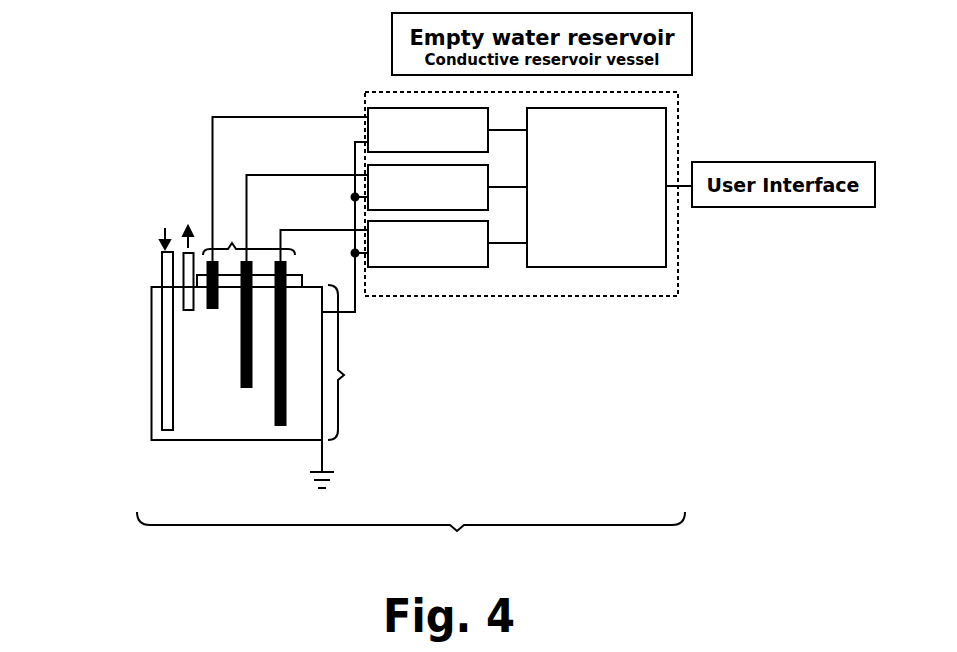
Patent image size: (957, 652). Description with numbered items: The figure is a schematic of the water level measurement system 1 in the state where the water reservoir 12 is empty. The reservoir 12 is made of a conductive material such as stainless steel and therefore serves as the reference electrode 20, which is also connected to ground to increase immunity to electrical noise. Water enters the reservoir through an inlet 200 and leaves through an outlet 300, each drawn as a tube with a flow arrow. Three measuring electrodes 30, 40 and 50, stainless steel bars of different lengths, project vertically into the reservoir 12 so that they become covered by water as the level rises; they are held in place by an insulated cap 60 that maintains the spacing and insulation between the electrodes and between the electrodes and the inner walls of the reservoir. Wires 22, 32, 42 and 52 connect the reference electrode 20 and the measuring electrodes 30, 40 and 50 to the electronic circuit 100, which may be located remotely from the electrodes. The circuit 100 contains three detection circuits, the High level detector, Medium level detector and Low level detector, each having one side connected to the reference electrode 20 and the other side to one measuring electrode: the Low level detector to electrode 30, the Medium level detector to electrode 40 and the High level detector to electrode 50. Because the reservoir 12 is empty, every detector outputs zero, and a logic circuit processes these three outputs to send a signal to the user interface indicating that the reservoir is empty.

The water level measurement system 1 is at (411, 534).
The water reservoir 12 is at (354, 362).
The reference electrode 20 is at (153, 408).
The wire 22 is at (357, 310).
The measuring electrode 30 is at (278, 427).
The wire 32 is at (307, 227).
The measuring electrode 40 is at (248, 388).
The wire 42 is at (268, 173).
The measuring electrode 50 is at (212, 308).
The wire 52 is at (252, 117).
The insulated cap 60 is at (230, 280).
The electronic circuit 100 is at (679, 300).
The inlet 200 is at (180, 277).
The outlet 300 is at (168, 323).